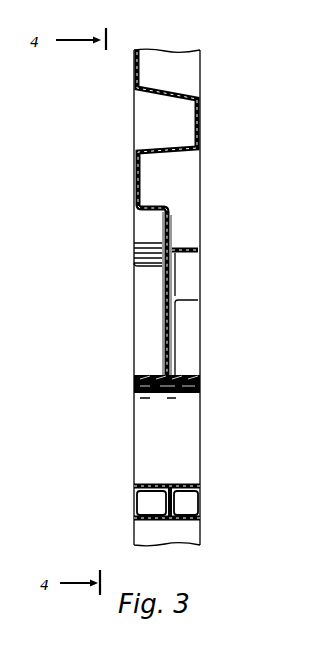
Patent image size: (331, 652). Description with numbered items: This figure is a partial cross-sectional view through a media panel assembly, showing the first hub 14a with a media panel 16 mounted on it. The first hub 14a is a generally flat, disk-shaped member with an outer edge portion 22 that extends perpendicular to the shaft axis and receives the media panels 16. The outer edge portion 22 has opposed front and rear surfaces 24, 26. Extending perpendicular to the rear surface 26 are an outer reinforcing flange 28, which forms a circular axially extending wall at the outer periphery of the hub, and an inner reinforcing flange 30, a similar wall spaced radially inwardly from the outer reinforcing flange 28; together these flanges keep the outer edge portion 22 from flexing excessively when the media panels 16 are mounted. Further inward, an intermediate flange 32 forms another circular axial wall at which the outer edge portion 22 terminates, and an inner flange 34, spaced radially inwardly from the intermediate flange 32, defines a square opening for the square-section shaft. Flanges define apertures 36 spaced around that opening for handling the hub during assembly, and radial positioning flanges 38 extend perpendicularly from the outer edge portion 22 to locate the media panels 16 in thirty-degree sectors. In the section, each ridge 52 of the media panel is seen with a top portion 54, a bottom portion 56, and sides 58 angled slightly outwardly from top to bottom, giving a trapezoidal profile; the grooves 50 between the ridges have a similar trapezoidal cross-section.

The first hub 14a is at (133, 535).
The media panels 16 is at (202, 65).
The outer edge portion 22 is at (202, 257).
The front surface 24 is at (156, 285).
The rear surface 26 is at (185, 275).
The outer reinforcing flange 28 is at (190, 243).
The inner reinforcing flange 30 is at (201, 302).
The intermediate flange 32 is at (147, 377).
The inner flange 34 is at (145, 515).
The apertures 36 is at (146, 413).
The radial positioning flanges 38 is at (152, 306).
The grooves 50 is at (157, 121).
The ridge 52 is at (124, 70).
The top portion 54 is at (201, 99).
The bottom portion 56 is at (146, 76).
The sides 58 is at (172, 90).